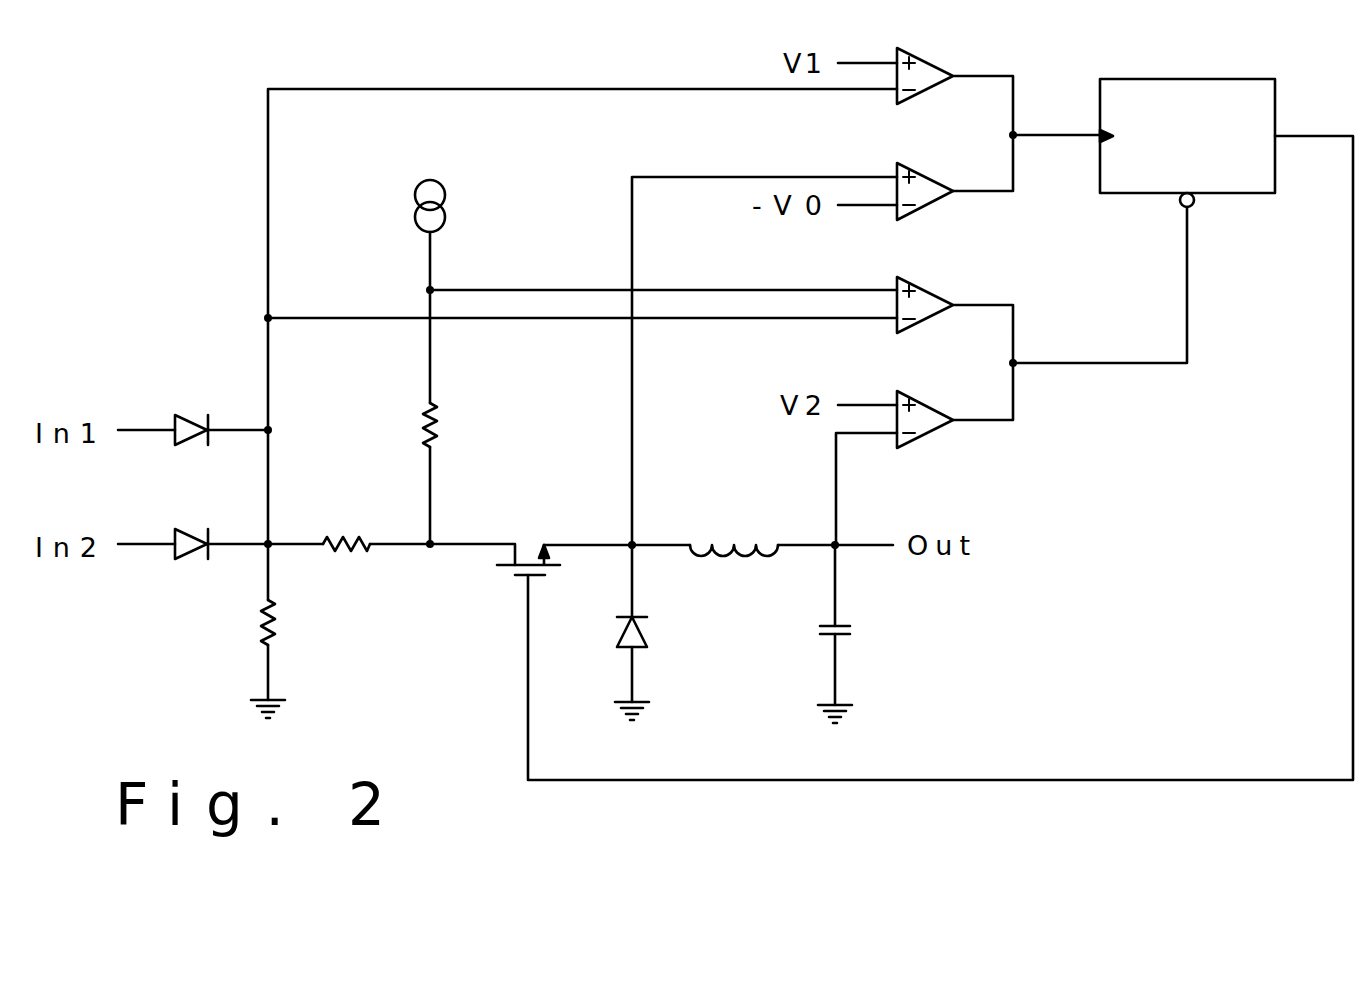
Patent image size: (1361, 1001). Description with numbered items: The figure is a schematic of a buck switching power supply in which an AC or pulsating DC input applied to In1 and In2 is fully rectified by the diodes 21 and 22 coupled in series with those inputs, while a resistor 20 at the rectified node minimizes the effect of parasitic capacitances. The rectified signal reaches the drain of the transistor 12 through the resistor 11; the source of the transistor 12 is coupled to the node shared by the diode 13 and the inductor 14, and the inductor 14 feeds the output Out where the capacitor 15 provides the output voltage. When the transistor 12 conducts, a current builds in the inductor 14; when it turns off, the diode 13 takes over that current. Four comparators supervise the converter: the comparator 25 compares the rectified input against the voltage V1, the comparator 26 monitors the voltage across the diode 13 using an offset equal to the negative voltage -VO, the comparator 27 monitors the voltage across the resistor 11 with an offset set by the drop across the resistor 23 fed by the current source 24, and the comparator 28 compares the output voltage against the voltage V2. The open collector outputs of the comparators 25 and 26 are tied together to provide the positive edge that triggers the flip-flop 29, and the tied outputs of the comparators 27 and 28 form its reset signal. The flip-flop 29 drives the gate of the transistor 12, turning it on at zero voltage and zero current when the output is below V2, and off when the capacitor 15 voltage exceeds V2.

The resistor 11 is at (360, 552).
The transistor 12 is at (515, 577).
The diode 13 is at (645, 645).
The inductor 14 is at (745, 560).
The capacitor 15 is at (850, 634).
The resistor 20 is at (262, 640).
The diode 21 is at (185, 448).
The diode 22 is at (185, 562).
The resistor 23 is at (432, 440).
The current source 24 is at (441, 189).
The comparator 25 is at (922, 62).
The comparator 26 is at (922, 177).
The comparator 27 is at (922, 290).
The comparator 28 is at (922, 405).
The flip-flop 29 is at (1195, 79).